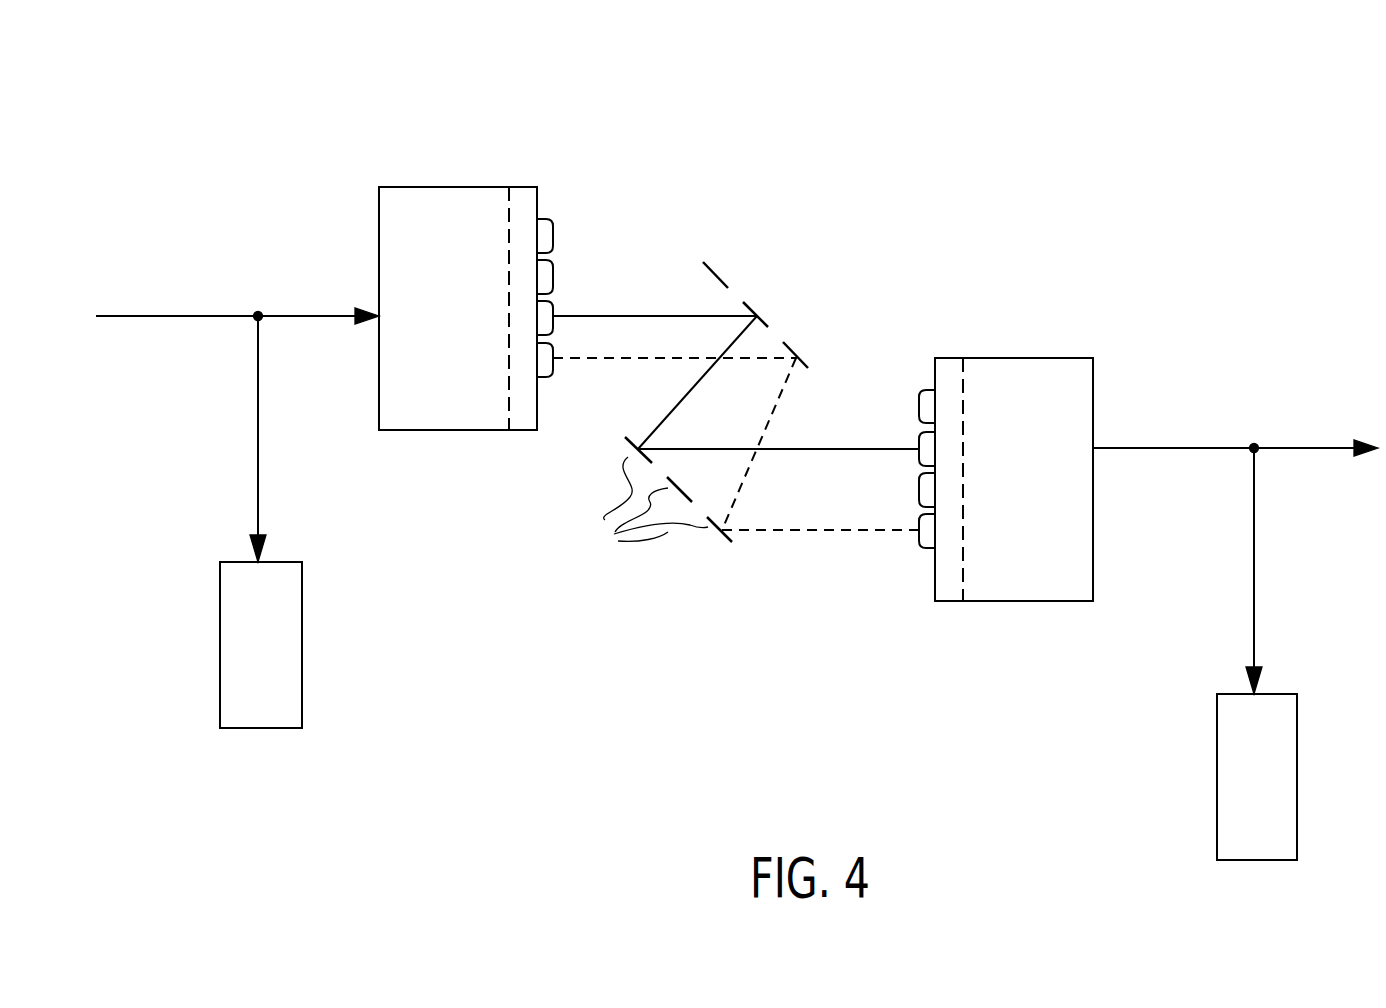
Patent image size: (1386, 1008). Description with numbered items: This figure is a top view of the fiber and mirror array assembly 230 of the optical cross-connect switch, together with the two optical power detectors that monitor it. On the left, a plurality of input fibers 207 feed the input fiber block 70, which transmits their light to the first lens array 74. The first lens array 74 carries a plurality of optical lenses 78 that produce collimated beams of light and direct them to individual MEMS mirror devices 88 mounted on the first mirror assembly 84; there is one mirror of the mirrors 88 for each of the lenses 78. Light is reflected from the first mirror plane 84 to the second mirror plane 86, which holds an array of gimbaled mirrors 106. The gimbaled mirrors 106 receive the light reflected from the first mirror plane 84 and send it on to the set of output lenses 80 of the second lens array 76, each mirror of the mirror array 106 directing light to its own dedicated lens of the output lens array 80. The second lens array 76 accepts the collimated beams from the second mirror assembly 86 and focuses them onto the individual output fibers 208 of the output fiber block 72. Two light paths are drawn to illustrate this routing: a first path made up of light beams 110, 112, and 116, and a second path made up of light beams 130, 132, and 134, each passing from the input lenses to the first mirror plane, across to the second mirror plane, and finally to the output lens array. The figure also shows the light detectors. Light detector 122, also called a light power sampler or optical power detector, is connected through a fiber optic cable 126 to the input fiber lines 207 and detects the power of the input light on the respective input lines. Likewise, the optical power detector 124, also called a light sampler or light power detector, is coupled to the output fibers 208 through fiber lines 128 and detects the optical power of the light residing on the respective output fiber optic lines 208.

The fiber and mirror array assembly 230 is at (1220, 137).
The input fibers 207 is at (168, 316).
The fiber optic cable 126 is at (258, 424).
The light detector 122 is at (220, 598).
The input fiber block 70 is at (435, 187).
The first lens array 74 is at (524, 187).
The optical lenses 78 is at (553, 222).
The light beam 110 is at (615, 316).
The light beam 130 is at (583, 360).
The first mirror assembly 84 is at (710, 260).
The MEMS mirror devices 88 is at (728, 288).
The light beam 112 is at (692, 388).
The gimbaled mirrors 106 is at (632, 468).
The light beam 132 is at (748, 479).
The second mirror assembly 86 is at (733, 545).
The light beam 134 is at (816, 533).
The light beam 116 is at (828, 449).
The output fiber block 72 is at (1031, 358).
The second lens array 76 is at (947, 358).
The output lenses 80 is at (919, 398).
The output fibers 208 is at (1158, 448).
The fiber lines 128 is at (1254, 555).
The optical power detector 124 is at (1236, 860).